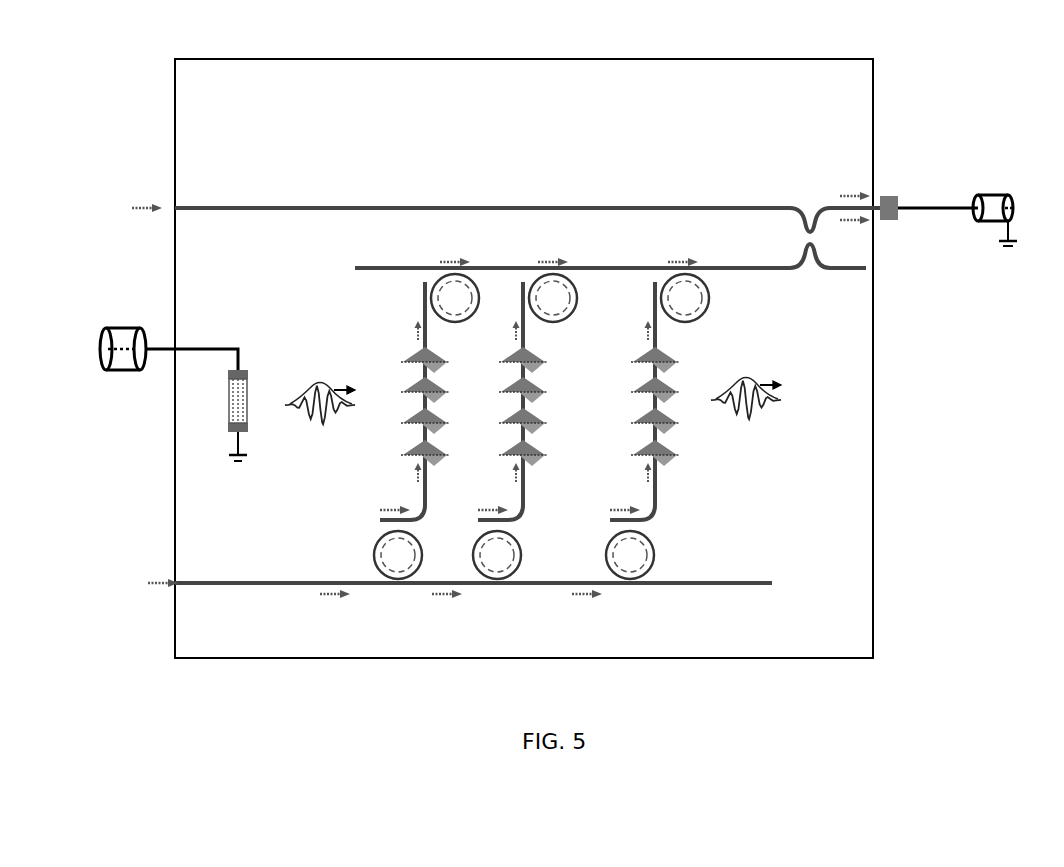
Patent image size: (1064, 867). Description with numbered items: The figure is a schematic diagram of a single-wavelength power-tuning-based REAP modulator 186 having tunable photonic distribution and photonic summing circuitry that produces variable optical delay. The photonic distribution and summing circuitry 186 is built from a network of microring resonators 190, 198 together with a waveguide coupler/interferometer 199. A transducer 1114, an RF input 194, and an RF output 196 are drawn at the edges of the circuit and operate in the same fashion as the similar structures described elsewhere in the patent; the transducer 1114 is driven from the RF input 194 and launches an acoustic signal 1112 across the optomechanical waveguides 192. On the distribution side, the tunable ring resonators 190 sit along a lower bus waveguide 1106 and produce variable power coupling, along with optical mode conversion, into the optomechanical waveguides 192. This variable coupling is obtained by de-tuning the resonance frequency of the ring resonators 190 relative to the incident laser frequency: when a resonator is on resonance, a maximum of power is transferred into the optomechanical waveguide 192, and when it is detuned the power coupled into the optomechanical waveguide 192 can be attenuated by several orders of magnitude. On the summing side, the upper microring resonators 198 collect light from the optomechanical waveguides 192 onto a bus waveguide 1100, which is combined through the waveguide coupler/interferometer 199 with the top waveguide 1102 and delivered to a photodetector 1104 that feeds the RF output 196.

The REAP modulator 186 is at (465, 54).
The tunable ring resonators 190 is at (618, 585).
The optomechanical waveguides 192 is at (432, 482).
The RF input 194 is at (168, 327).
The RF output 196 is at (977, 211).
The microring resonators 198 is at (680, 288).
The waveguide coupler/interferometer 199 is at (812, 226).
The upper bus waveguide 1100 is at (370, 282).
The top waveguide 1102 is at (610, 204).
The photodetector 1104 is at (932, 211).
The bottom bus waveguide 1106 is at (268, 592).
The acoustic signal 1112 is at (524, 428).
The transducer 1114 is at (218, 421).